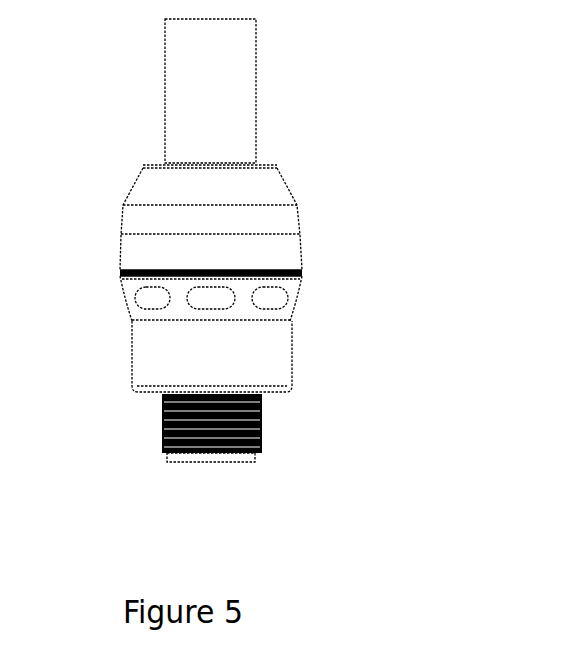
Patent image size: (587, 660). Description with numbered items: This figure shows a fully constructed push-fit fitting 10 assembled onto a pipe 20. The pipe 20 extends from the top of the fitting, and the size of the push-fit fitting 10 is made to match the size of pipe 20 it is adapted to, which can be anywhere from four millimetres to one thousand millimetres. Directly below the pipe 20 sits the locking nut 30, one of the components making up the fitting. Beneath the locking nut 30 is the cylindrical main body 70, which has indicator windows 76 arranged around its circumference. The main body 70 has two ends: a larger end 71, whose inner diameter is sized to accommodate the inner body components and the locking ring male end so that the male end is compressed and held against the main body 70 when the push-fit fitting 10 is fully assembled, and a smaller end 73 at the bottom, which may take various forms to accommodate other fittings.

The push-fit fitting 10 is at (412, 268).
The pipe 20 is at (138, 74).
The locking nut 30 is at (88, 196).
The main body 70 is at (95, 347).
The larger end 71 is at (298, 280).
The smaller end 73 is at (150, 440).
The indicator windows 76 is at (148, 297).